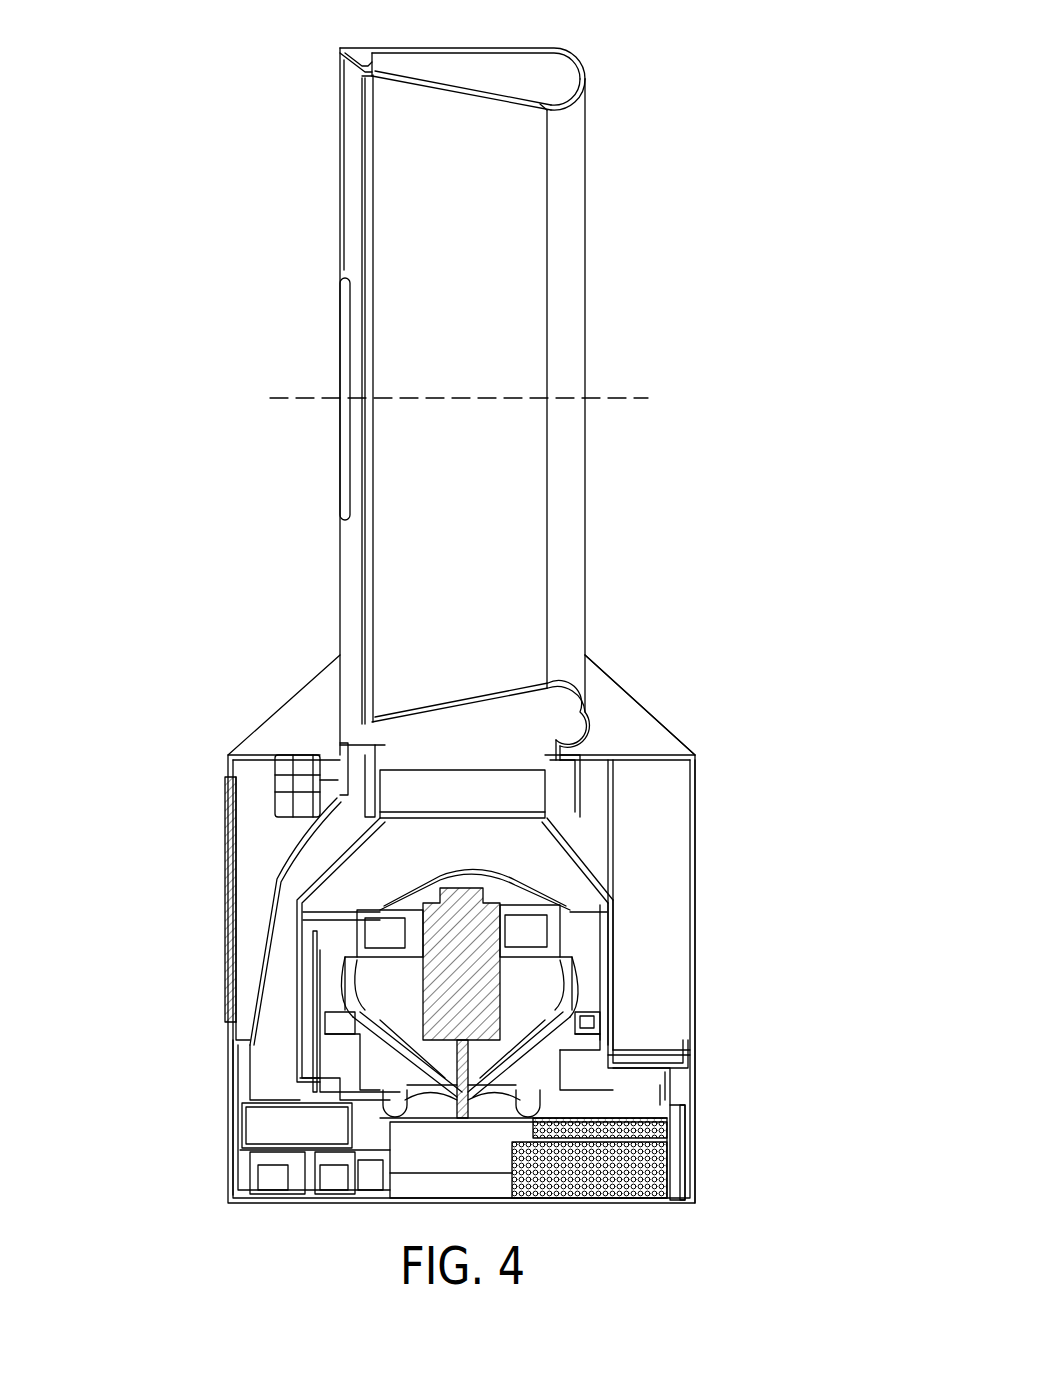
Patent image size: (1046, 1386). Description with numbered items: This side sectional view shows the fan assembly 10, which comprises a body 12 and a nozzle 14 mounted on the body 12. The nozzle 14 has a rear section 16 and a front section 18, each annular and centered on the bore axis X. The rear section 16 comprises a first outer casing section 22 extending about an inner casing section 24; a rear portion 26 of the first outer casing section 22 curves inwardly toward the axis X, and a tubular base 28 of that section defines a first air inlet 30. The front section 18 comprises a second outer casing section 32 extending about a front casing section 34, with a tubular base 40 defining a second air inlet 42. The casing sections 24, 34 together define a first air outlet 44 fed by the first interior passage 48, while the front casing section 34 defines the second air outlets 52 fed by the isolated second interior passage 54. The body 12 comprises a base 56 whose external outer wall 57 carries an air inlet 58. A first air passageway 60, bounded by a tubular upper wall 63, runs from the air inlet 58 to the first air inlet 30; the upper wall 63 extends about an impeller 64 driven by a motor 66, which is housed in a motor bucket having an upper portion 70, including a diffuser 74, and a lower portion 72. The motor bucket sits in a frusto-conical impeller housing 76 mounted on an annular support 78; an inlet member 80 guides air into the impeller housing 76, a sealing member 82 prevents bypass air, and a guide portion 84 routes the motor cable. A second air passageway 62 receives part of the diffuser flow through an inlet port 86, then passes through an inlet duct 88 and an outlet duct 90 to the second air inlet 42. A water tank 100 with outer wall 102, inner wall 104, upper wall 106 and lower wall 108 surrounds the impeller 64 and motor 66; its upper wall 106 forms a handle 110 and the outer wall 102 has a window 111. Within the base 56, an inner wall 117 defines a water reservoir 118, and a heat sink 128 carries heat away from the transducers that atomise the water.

The fan assembly 10 is at (262, 504).
The body 12 is at (190, 1068).
The nozzle 14 is at (622, 552).
The rear section 16 is at (600, 70).
The front section 18 is at (335, 58).
The first outer casing section 22 is at (532, 48).
The inner casing section 24 is at (480, 103).
The rear portion 26 is at (595, 716).
The tubular base 28 is at (385, 748).
The first air inlet 30 is at (510, 780).
The second outer casing section 32 is at (362, 48).
The front casing section 34 is at (340, 170).
The tubular base 40 is at (335, 760).
The second air inlet 42 is at (355, 782).
The first air outlet 44 is at (358, 578).
The first interior passage 48 is at (560, 93).
The second air outlets 52 is at (345, 315).
The second interior passage 54 is at (358, 62).
The base 56 is at (660, 1080).
The external outer wall 57 is at (235, 1147).
The air inlet 58 is at (690, 1163).
The first air passageway 60 is at (562, 877).
The second air passageway 62 is at (270, 1000).
The upper wall 63 is at (341, 903).
The impeller 64 is at (545, 1098).
The motor 66 is at (461, 893).
The upper portion 70 is at (430, 895).
The lower portion 72 is at (560, 1000).
The diffuser 74 is at (575, 958).
The impeller housing 76 is at (555, 1060).
The annular support 78 is at (340, 1042).
The inlet member 80 is at (405, 1105).
The sealing member 82 is at (600, 1020).
The guide portion 84 is at (605, 1045).
The inlet port 86 is at (300, 938).
The inlet duct 88 is at (310, 1040).
The outlet duct 90 is at (300, 872).
The water tank 100 is at (250, 800).
The outer wall 102 is at (698, 783).
The inner wall 104 is at (613, 898).
The upper wall 106 is at (660, 755).
The lower wall 108 is at (675, 1045).
The handle 110 is at (565, 770).
The window 111 is at (232, 840).
The inner wall 117 is at (330, 1175).
The water reservoir 118 is at (255, 1122).
The heat sink 128 is at (275, 1165).
The bore axis X is at (622, 398).